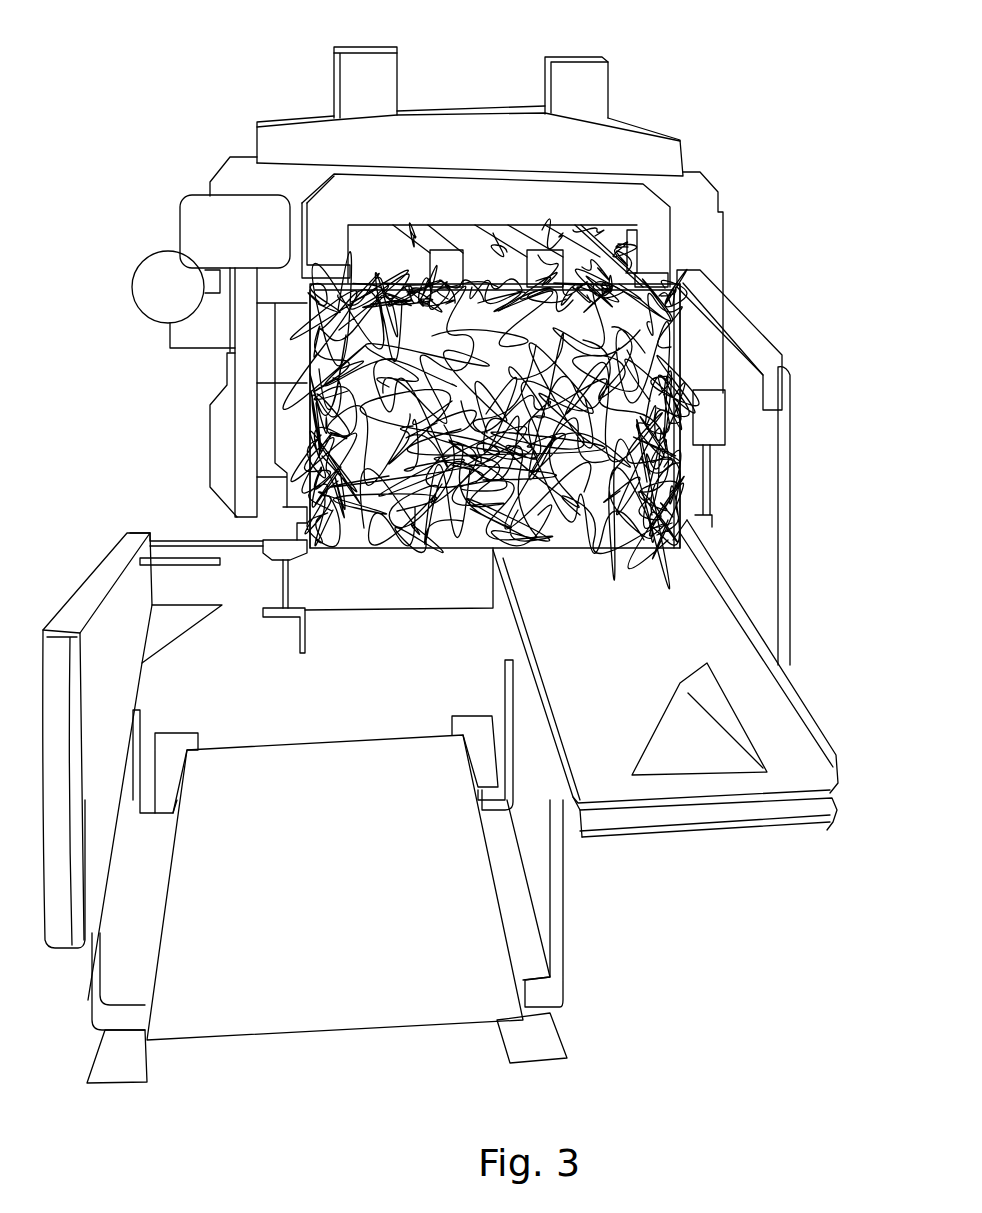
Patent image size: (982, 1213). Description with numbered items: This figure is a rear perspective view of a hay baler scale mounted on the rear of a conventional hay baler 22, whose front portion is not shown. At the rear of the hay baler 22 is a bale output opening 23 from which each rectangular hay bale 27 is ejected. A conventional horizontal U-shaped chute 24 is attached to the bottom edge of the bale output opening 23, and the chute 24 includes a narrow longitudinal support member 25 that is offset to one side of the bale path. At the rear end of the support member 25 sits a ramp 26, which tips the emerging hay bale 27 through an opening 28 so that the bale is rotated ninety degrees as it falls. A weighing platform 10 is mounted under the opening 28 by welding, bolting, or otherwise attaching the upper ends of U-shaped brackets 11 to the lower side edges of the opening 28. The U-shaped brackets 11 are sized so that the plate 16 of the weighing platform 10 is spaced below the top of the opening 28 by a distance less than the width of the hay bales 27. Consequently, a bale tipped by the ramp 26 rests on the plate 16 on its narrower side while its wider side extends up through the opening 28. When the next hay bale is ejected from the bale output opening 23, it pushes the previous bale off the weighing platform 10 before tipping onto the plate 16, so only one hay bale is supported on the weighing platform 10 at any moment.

The weighing platform 10 is at (340, 1046).
The U-shaped brackets 11 is at (142, 724).
The plate 16 is at (265, 1040).
The hay baler 22 is at (472, 90).
The bale output opening 23 is at (690, 305).
The U-shaped chute 24 is at (807, 717).
The longitudinal support member 25 is at (682, 590).
The ramp 26 is at (662, 712).
The hay bale 27 is at (680, 485).
The opening 28 is at (382, 593).